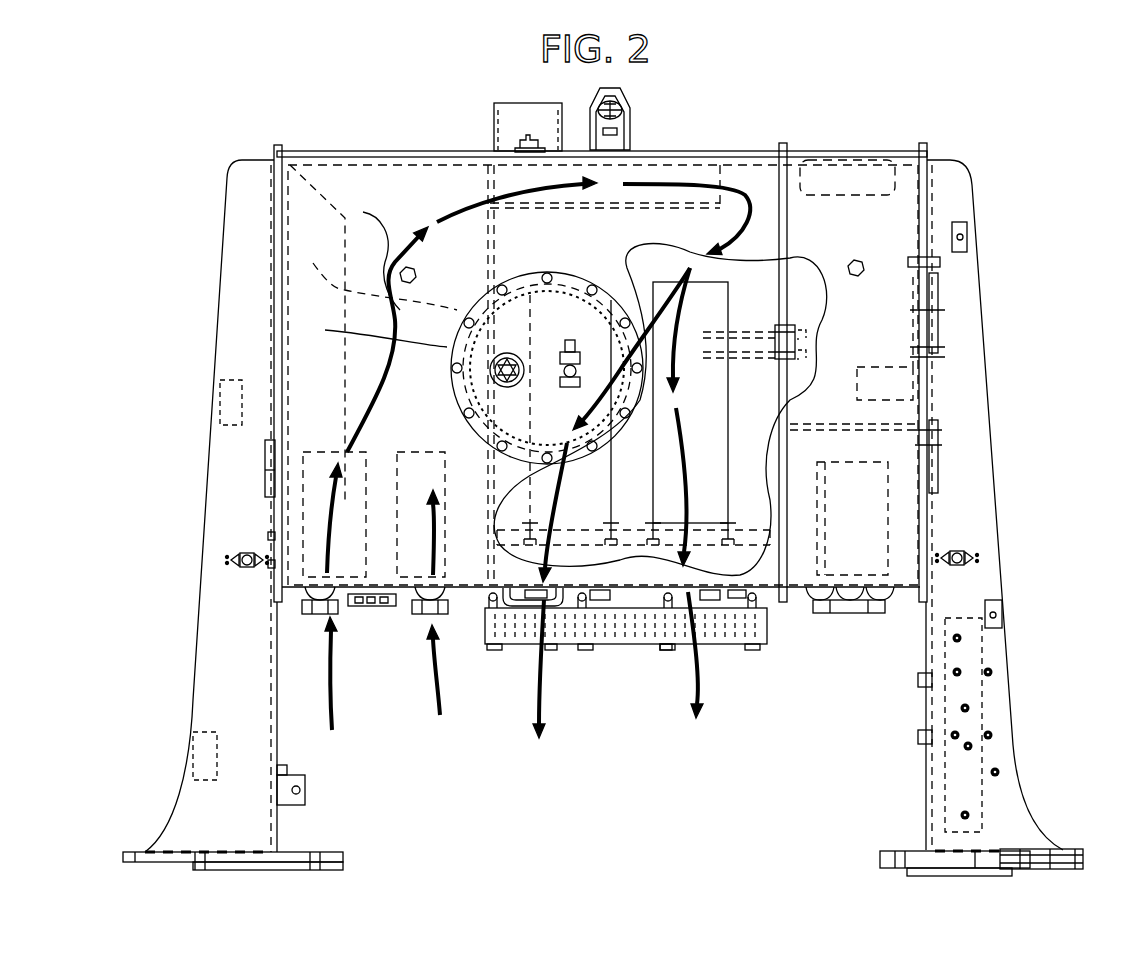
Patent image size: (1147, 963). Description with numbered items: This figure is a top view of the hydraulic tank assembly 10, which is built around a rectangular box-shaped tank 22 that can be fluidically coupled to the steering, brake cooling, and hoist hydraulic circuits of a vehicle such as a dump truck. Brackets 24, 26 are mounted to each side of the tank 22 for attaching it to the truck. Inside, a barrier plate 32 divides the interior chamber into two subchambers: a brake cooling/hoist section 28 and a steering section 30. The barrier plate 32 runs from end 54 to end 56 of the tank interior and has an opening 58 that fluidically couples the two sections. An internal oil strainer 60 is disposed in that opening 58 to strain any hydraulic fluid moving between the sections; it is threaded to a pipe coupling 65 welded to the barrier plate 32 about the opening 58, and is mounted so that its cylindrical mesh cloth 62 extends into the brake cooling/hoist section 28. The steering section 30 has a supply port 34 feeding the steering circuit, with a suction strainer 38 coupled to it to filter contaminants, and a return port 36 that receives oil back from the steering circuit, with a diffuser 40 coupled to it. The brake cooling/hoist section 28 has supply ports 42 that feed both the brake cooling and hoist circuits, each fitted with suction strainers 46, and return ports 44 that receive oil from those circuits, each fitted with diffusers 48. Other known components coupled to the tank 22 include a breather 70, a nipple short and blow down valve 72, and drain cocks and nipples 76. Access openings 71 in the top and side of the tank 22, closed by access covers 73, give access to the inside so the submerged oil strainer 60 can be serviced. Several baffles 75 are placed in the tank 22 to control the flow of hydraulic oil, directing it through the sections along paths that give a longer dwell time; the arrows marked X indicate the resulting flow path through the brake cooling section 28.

The hydraulic tank assembly 10 is at (1062, 632).
The tank 22 is at (332, 152).
The bracket 24 is at (214, 487).
The bracket 26 is at (982, 406).
The brake cooling/hoist section 28 is at (412, 215).
The steering section 30 is at (905, 220).
The barrier plate 32 is at (787, 183).
The supply port 34 is at (843, 626).
The return port 36 is at (946, 382).
The suction strainer 38 is at (890, 528).
The diffuser 40 is at (907, 358).
The supply ports 42 is at (553, 654).
The return ports 44 is at (422, 626).
The suction strainers 46 is at (603, 280).
The diffusers 48 is at (330, 450).
The end 54 is at (763, 150).
The end 56 is at (768, 600).
The opening 58 is at (790, 328).
The oil strainer 60 is at (816, 341).
The mesh cloth 62 is at (717, 357).
The pipe coupling 65 is at (786, 382).
The breather 70 is at (498, 102).
The access openings 71 is at (377, 272).
The nipple short and blow down valve 72 is at (590, 92).
The access covers 73 is at (371, 329).
The baffles 75 is at (607, 280).
The drain cocks and nipples 76 is at (226, 556).